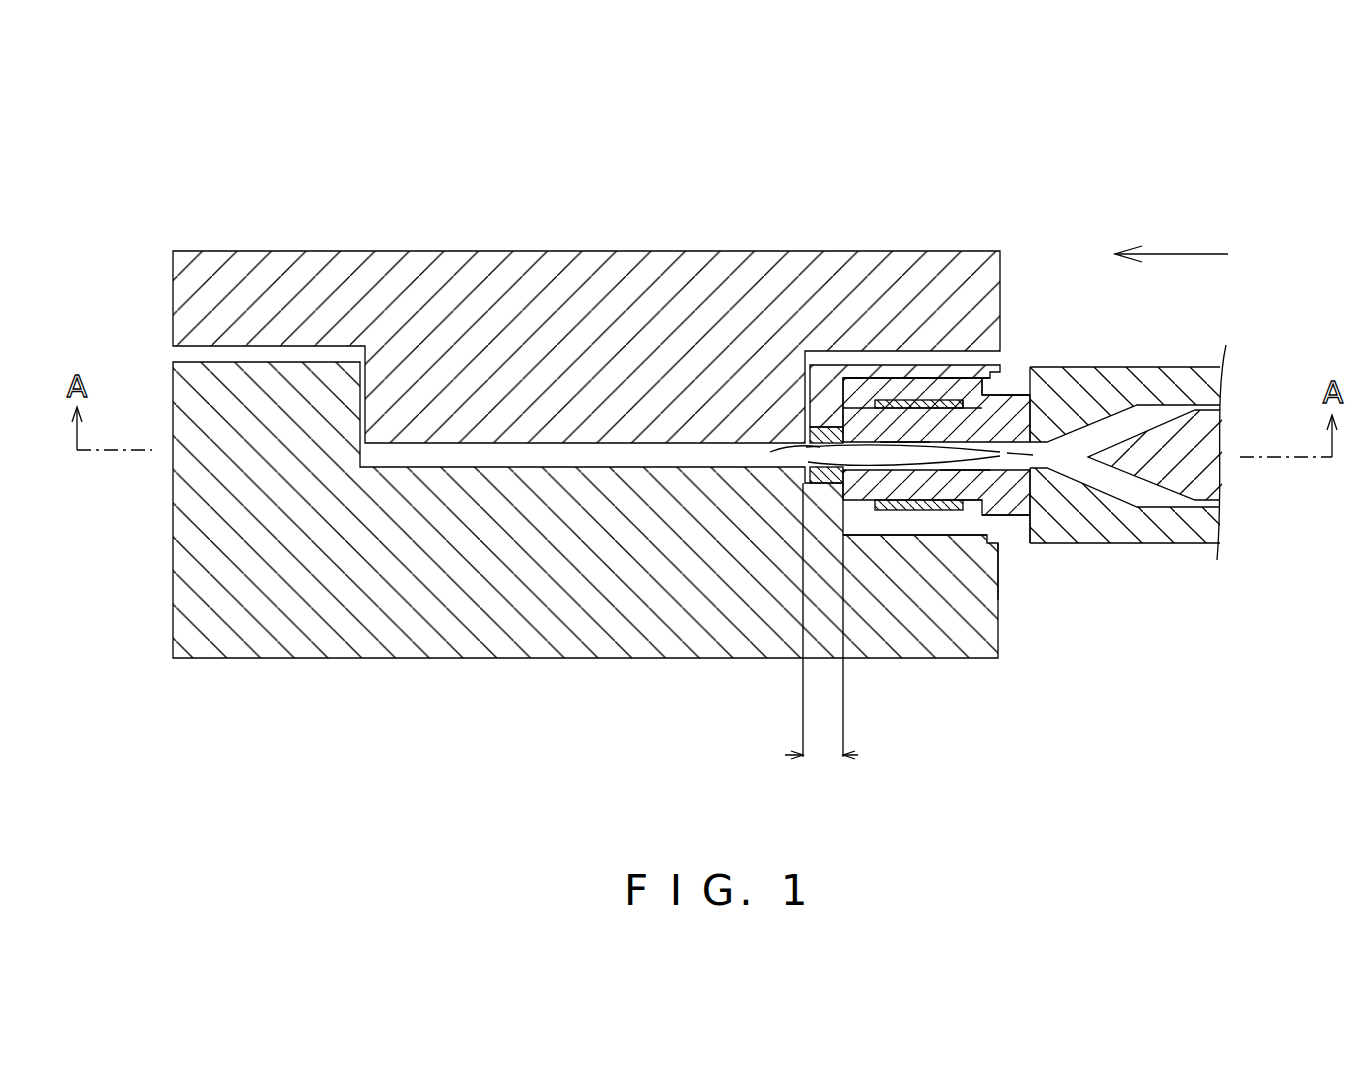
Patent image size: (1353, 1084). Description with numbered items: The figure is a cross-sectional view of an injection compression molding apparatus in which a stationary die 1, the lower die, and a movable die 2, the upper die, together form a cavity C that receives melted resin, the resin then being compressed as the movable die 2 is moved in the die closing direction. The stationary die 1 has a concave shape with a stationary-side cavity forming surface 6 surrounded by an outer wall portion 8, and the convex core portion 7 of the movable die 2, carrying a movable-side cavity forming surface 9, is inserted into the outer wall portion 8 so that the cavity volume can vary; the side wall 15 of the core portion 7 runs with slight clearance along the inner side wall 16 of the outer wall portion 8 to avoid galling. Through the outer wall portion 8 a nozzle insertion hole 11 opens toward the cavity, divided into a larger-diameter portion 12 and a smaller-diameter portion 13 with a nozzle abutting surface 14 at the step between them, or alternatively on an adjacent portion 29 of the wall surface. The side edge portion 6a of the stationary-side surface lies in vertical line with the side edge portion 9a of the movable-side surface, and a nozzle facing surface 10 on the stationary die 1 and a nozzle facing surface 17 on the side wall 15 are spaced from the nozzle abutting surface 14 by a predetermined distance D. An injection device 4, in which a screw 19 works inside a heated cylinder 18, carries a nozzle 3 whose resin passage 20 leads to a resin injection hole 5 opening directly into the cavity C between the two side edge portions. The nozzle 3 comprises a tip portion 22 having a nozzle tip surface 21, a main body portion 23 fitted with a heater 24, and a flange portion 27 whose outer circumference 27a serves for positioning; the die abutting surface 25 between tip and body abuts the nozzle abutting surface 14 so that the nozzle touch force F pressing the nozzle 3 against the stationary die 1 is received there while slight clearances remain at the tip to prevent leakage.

The stationary die 1 is at (480, 662).
The movable die 2 is at (566, 249).
The nozzle 3 is at (997, 567).
The injection device 4 is at (1128, 474).
The resin injection hole 5 is at (1060, 545).
The stationary-side cavity forming surface 6 is at (390, 462).
The side edge portion 6a is at (790, 463).
The core portion 7 is at (648, 404).
The outer wall portion 8 is at (282, 428).
The movable-side cavity forming surface 9 is at (505, 445).
The side edge portion 9a is at (772, 443).
The nozzle facing surface 10 is at (812, 480).
The nozzle insertion hole 11 is at (968, 527).
The larger-diameter portion 12 is at (913, 525).
The smaller-diameter portion 13 is at (833, 440).
The nozzle abutting surface 14 is at (853, 537).
The side wall 15 is at (355, 380).
The inner side wall 16 is at (368, 408).
The nozzle facing surface 17 is at (877, 372).
The cylinder 18 is at (1193, 385).
The screw 19 is at (1147, 452).
The resin passage 20 is at (1045, 455).
The nozzle tip surface 21 is at (950, 410).
The tip portion 22 is at (908, 443).
The main body portion 23 is at (965, 458).
The heater 24 is at (985, 400).
The die abutting surface 25 is at (920, 402).
The flange portion 27 is at (1005, 402).
The outer circumference 27a is at (1020, 420).
The adjacent portion 29 is at (997, 560).
The cavity C is at (608, 455).
The predetermined distance D is at (821, 621).
The nozzle touch force F is at (1184, 251).